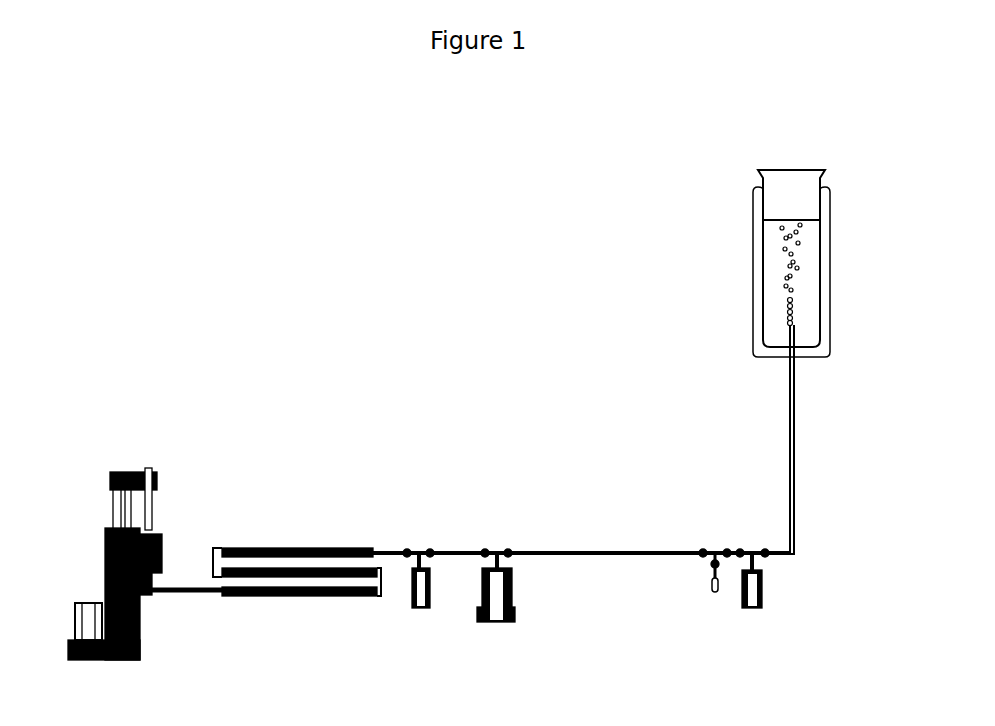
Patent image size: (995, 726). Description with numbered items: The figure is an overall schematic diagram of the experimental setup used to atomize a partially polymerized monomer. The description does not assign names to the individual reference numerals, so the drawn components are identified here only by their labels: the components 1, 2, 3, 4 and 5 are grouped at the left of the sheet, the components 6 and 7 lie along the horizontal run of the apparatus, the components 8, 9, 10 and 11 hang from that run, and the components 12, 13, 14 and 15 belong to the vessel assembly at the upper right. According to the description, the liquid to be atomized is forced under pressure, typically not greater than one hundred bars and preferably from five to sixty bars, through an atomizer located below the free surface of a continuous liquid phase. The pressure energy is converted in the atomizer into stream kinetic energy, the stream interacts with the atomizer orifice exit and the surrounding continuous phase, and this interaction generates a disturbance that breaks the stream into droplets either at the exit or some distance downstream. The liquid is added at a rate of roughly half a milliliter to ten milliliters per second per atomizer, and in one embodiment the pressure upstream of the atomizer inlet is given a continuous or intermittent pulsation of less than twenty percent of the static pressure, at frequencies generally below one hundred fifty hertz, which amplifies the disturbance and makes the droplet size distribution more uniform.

The pump head 1 is at (162, 543).
The piston rod 2 is at (150, 510).
The pump 3 is at (105, 543).
The drive cylinder 4 is at (83, 600).
The feed tube 5 is at (170, 602).
The main conduit 6 is at (388, 545).
The coil 7 is at (285, 545).
The first valve 8 is at (417, 613).
The second valve 9 is at (520, 627).
The third valve 10 is at (717, 595).
The fourth valve 11 is at (745, 610).
The vessel 12 is at (825, 233).
The bubbles 13 is at (795, 277).
The jacket 14 is at (808, 305).
The outlet tube 15 is at (798, 327).